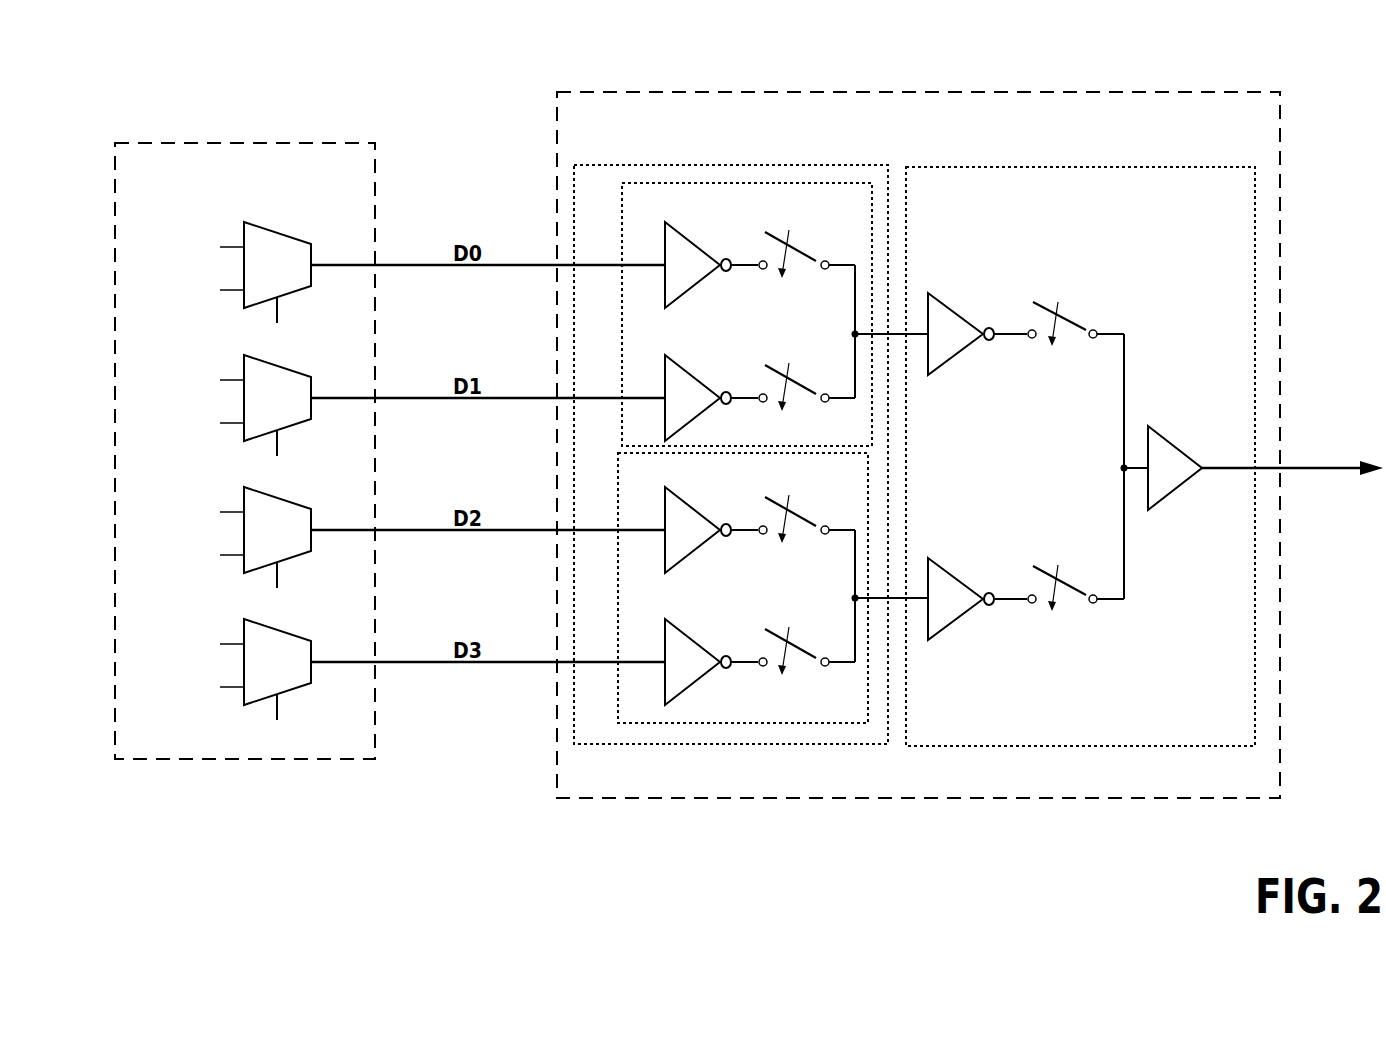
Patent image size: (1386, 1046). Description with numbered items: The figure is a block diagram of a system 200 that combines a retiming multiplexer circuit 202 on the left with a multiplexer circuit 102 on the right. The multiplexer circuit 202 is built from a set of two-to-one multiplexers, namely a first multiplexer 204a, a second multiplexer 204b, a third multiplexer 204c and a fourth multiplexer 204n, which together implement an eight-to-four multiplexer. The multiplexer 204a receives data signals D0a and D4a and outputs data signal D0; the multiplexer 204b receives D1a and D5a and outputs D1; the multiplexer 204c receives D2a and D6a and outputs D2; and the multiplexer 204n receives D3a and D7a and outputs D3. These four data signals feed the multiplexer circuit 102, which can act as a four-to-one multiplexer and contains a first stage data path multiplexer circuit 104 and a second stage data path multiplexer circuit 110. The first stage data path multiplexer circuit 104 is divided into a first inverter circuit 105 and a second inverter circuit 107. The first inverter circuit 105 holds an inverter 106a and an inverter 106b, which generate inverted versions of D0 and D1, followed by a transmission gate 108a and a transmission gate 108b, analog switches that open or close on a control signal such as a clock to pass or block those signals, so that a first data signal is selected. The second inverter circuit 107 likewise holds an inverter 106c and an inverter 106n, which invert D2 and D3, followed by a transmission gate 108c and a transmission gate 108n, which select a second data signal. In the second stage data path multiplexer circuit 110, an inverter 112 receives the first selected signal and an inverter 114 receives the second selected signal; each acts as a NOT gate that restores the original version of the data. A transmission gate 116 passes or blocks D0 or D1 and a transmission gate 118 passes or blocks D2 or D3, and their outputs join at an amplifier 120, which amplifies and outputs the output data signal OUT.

The system 200 is at (1266, 37).
The multiplexer circuit 202 is at (172, 142).
The multiplexer 204a is at (265, 227).
The multiplexer 204b is at (265, 360).
The multiplexer 204c is at (265, 492).
The multiplexer 204n is at (265, 624).
The multiplexer circuit 102 is at (712, 90).
The first stage data path multiplexer circuit 104 is at (702, 164).
The first inverter circuit 105 is at (823, 183).
The second inverter circuit 107 is at (680, 723).
The inverter 106a is at (677, 232).
The inverter 106b is at (677, 365).
The inverter 106c is at (677, 497).
The inverter 106n is at (677, 629).
The transmission gate 108a is at (800, 279).
The transmission gate 108b is at (800, 412).
The transmission gate 108c is at (800, 544).
The transmission gate 108n is at (800, 676).
The second stage data path multiplexer circuit 110 is at (970, 165).
The inverter 112 is at (947, 300).
The inverter 114 is at (943, 563).
The transmission gate 116 is at (1068, 348).
The transmission gate 118 is at (1066, 618).
The amplifier 120 is at (1165, 433).